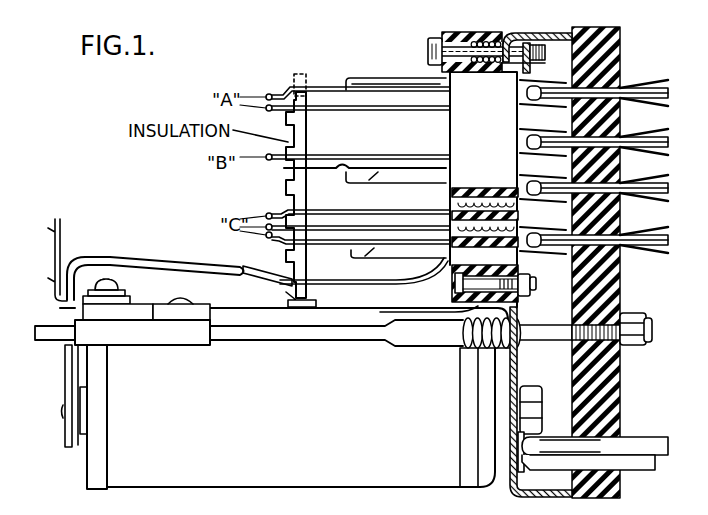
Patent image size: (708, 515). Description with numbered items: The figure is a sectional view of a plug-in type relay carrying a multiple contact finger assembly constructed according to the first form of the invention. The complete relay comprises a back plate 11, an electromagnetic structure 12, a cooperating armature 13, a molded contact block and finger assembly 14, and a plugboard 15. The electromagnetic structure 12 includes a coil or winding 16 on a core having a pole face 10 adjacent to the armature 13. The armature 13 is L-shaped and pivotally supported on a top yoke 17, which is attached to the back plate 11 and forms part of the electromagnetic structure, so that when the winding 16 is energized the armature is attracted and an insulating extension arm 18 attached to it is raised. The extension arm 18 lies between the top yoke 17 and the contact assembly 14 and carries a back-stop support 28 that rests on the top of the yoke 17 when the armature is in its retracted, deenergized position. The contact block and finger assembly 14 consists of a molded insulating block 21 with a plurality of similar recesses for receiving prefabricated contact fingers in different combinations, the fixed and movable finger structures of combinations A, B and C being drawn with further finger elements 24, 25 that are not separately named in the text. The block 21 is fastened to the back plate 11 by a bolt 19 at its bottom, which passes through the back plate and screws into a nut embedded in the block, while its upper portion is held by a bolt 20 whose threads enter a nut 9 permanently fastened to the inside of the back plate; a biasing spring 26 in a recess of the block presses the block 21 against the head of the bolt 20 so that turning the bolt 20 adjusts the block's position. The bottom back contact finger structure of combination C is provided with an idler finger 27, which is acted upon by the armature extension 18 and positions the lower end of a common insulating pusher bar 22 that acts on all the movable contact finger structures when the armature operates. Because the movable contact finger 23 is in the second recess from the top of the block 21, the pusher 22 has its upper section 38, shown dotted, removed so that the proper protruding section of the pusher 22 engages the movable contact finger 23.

The nut 9 is at (530, 58).
The pole face 10 is at (80, 392).
The back plate 11 is at (545, 33).
The electromagnetic structure 12 is at (270, 419).
The armature 13 is at (150, 259).
The contact block and finger assembly 14 is at (343, 56).
The plugboard 15 is at (616, 33).
The winding 16 is at (163, 488).
The top yoke 17 is at (143, 309).
The extension arm 18 is at (262, 268).
The bolt 19 is at (530, 296).
The bolt 20 is at (436, 40).
The molded block 21 is at (456, 32).
The common pusher bar 22 is at (307, 118).
The movable contact finger 23 is at (398, 108).
The terminal 24 is at (283, 92).
The terminal 25 is at (280, 166).
The biasing spring 26 is at (501, 42).
The idler finger 27 is at (372, 272).
The back-stop support 28 is at (308, 305).
The upper section of pusher 38 is at (299, 74).